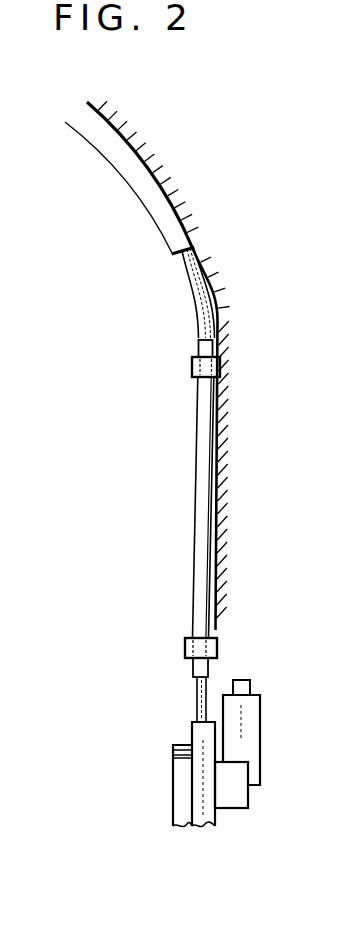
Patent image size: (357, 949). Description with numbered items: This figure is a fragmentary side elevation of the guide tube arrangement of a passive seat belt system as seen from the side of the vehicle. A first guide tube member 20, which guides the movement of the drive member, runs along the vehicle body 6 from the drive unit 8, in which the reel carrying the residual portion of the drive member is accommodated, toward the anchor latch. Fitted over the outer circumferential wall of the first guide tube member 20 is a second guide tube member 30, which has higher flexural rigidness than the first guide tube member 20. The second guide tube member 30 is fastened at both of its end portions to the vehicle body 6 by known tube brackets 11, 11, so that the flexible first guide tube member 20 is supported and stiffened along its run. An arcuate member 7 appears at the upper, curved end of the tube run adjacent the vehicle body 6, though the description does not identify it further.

The arcuate guide member 7 is at (150, 196).
The vehicle body 6 is at (207, 255).
The first guide tube member 20 is at (192, 288).
The tube bracket 11 is at (192, 366).
The second guide tube member 30 is at (201, 433).
The drive unit 8 is at (173, 785).